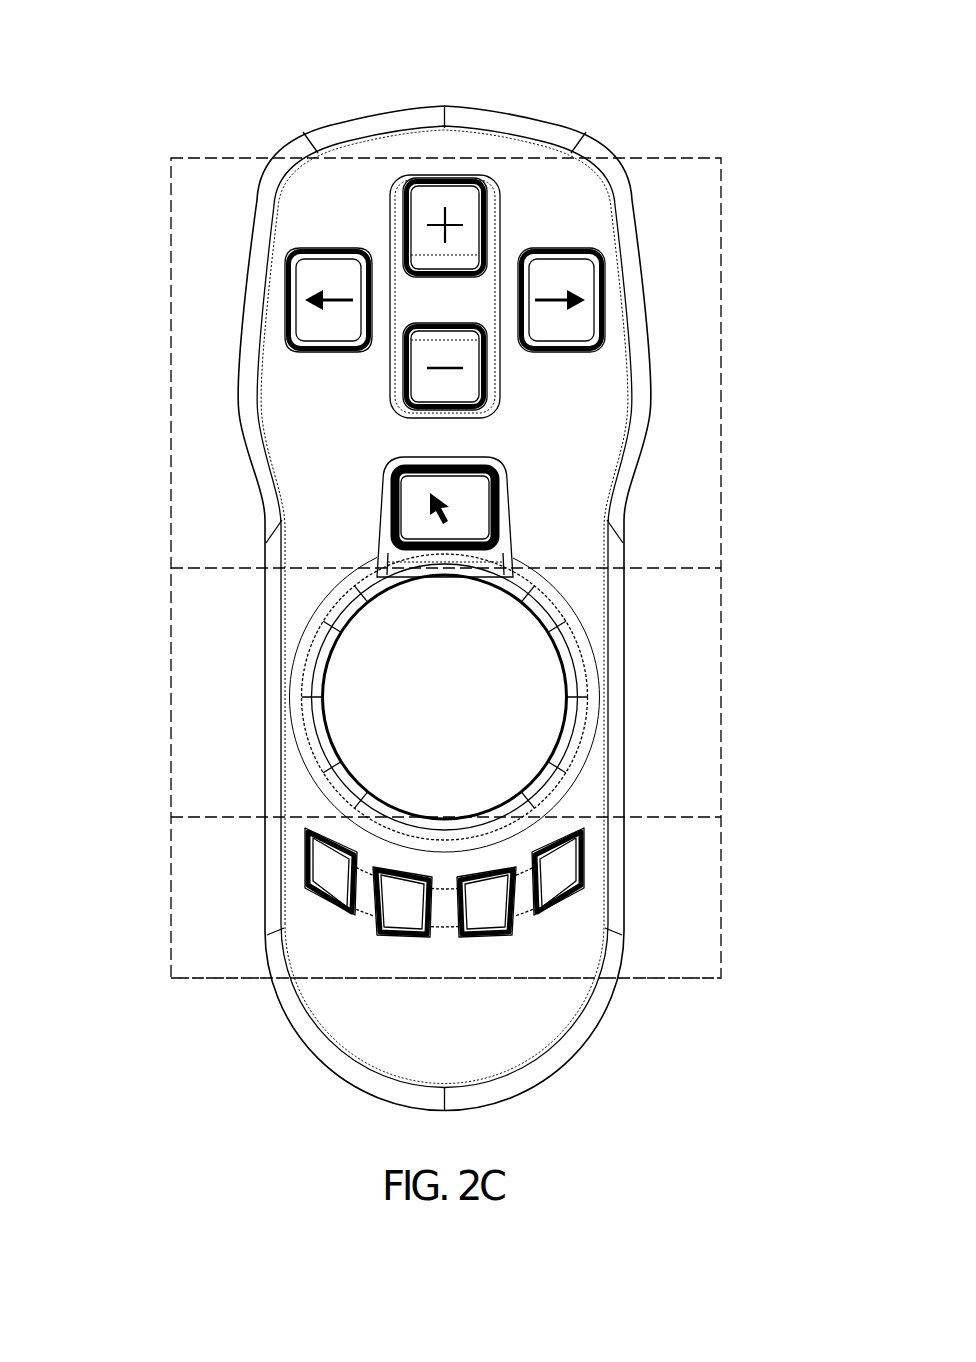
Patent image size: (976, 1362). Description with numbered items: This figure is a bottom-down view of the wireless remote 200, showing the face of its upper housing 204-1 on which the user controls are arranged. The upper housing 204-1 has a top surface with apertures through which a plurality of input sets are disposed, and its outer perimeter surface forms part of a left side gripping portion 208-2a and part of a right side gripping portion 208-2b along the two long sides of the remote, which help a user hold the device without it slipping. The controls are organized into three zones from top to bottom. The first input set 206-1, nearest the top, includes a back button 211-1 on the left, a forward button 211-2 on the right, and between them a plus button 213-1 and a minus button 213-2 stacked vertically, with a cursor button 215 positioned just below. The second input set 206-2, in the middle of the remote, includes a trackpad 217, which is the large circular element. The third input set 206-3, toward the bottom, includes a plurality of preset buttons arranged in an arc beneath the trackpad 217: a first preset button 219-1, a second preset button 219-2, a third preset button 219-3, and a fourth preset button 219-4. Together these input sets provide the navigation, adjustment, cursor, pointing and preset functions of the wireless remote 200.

The wireless remote 200 is at (192, 65).
The upper housing 204-1 is at (465, 1048).
The first input set 206-1 is at (170, 298).
The second input set 206-2 is at (170, 642).
The third input set 206-3 is at (170, 892).
The left side gripping portion 208-2a is at (250, 505).
The right side gripping portion 208-2b is at (637, 505).
The back button 211-1 is at (337, 318).
The forward button 211-2 is at (573, 275).
The plus button 213-1 is at (463, 213).
The minus button 213-2 is at (458, 383).
The cursor button 215 is at (413, 503).
The trackpad 217 is at (378, 692).
The first preset button 219-1 is at (320, 898).
The second preset button 219-2 is at (407, 920).
The third preset button 219-3 is at (492, 920).
The fourth preset button 219-4 is at (568, 898).